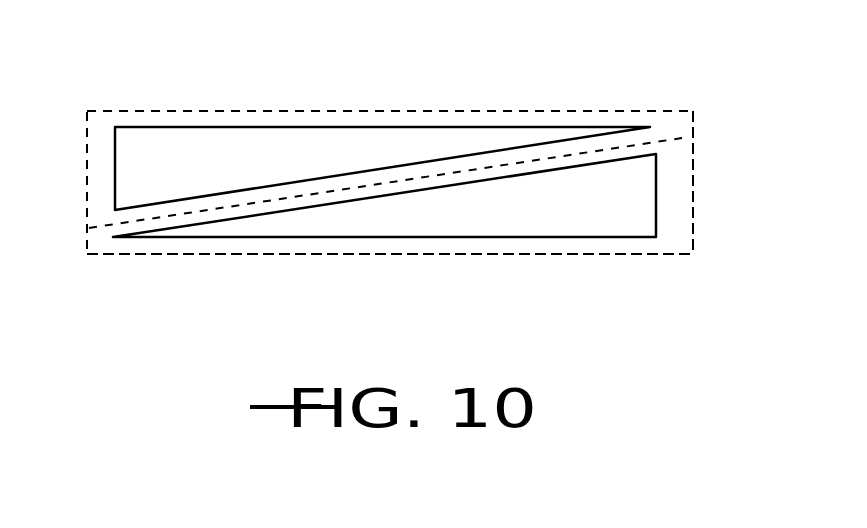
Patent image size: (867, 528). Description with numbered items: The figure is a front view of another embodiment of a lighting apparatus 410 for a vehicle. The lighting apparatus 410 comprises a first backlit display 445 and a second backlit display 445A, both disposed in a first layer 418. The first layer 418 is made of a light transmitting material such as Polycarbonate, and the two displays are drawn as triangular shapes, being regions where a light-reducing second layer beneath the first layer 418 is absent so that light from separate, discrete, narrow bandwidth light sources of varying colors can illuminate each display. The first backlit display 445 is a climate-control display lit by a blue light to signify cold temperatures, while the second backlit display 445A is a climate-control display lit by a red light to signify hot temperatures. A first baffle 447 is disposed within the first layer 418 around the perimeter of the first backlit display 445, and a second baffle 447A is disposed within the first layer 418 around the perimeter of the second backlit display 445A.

The lighting apparatus 410 is at (498, 89).
The first layer 418 is at (672, 187).
The first backlit display 445 is at (232, 152).
The second backlit display 445A is at (463, 213).
The first baffle 447 is at (355, 113).
The second baffle 447A is at (228, 253).